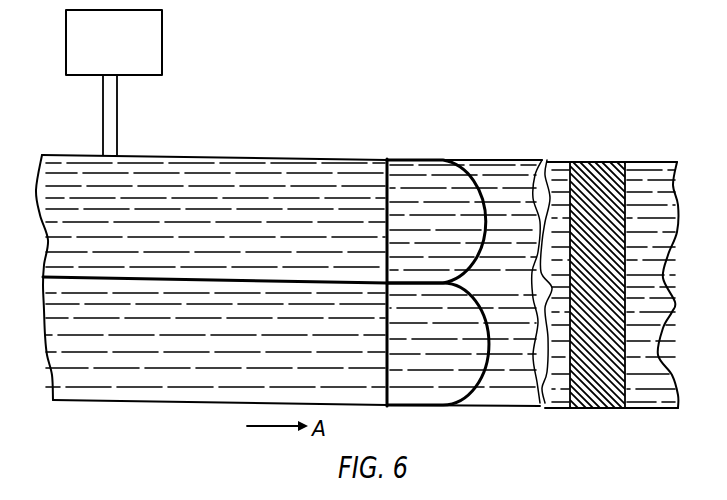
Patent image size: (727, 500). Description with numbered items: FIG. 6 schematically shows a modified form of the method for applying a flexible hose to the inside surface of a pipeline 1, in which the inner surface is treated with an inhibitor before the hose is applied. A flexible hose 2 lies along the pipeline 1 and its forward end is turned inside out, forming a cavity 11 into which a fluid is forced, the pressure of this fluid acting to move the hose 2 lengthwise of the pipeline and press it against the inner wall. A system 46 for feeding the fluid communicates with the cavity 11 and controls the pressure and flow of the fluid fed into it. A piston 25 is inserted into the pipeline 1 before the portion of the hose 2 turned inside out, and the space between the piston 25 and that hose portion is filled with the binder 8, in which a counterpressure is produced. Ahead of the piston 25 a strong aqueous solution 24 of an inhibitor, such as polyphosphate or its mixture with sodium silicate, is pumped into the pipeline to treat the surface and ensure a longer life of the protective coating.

The pipeline 1 is at (496, 157).
The flexible hose 2 is at (225, 276).
The binder 8 is at (503, 398).
The cavity 11 is at (421, 166).
The aqueous solution of inhibitor 24 is at (652, 388).
The piston 25 is at (617, 163).
The system for feeding the fluid 46 is at (147, 53).